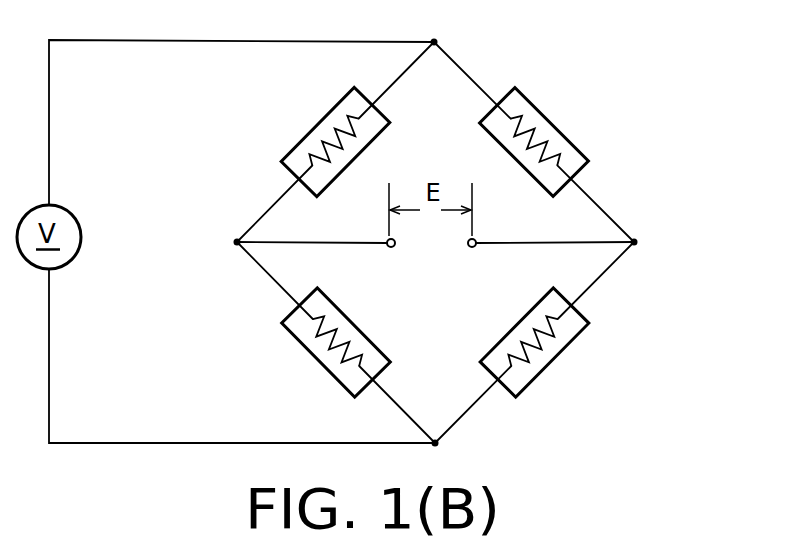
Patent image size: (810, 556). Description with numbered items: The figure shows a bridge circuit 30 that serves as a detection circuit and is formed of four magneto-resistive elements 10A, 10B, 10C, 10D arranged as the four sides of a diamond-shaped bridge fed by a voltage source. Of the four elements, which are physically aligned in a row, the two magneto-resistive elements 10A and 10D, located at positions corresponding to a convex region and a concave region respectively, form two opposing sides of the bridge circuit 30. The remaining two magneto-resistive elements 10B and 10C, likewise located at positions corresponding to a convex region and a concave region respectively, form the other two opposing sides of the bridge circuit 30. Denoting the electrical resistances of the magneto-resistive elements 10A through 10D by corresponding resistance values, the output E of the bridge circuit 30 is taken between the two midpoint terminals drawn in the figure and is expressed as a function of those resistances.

The magneto-resistive element 10A is at (300, 131).
The magneto-resistive element 10B is at (572, 137).
The magneto-resistive element 10C is at (317, 362).
The magneto-resistive element 10D is at (562, 353).
The bridge circuit 30 is at (655, 243).